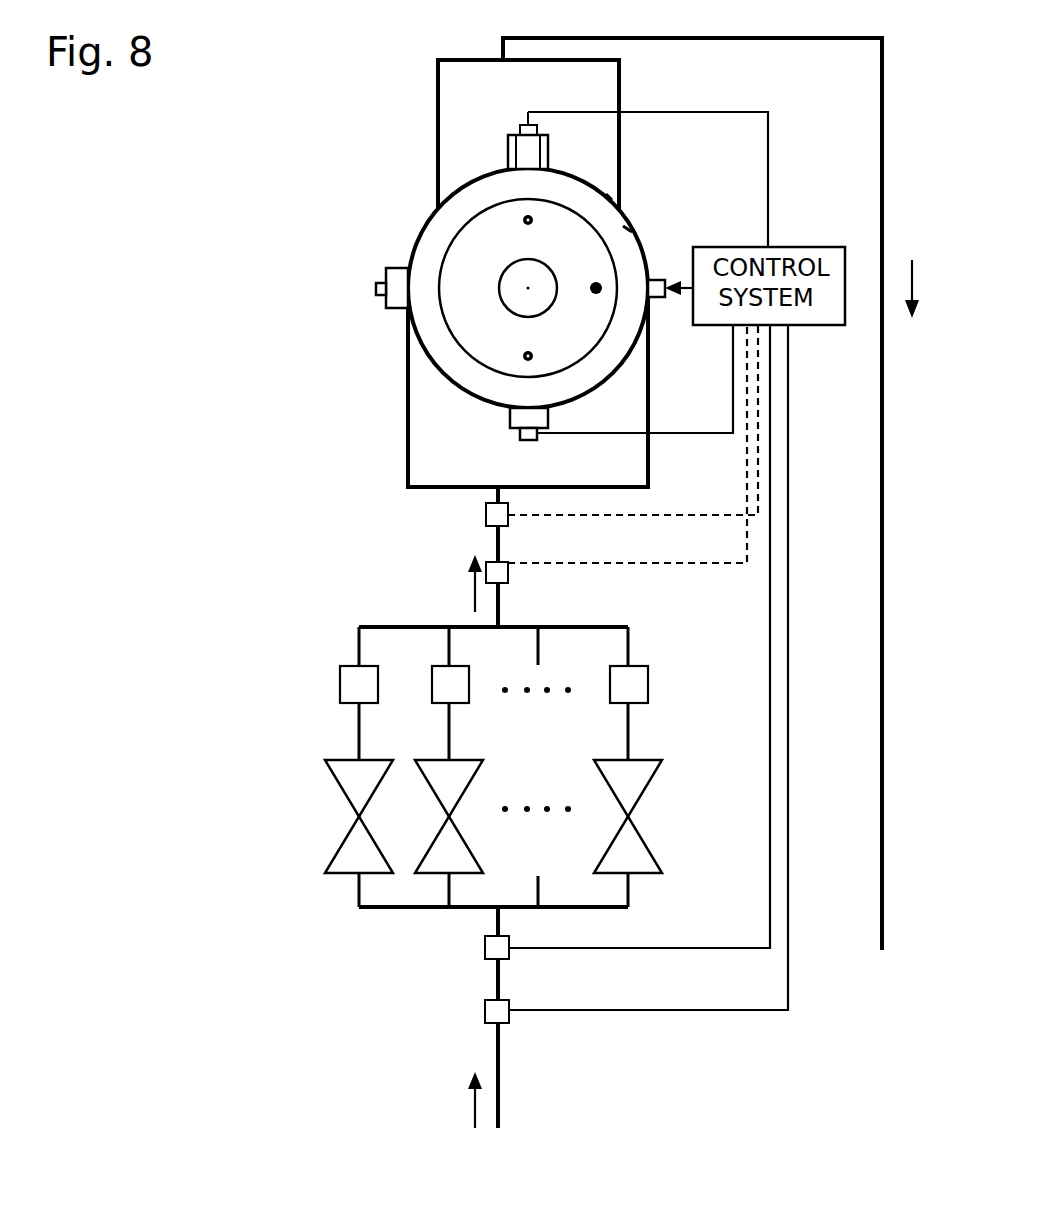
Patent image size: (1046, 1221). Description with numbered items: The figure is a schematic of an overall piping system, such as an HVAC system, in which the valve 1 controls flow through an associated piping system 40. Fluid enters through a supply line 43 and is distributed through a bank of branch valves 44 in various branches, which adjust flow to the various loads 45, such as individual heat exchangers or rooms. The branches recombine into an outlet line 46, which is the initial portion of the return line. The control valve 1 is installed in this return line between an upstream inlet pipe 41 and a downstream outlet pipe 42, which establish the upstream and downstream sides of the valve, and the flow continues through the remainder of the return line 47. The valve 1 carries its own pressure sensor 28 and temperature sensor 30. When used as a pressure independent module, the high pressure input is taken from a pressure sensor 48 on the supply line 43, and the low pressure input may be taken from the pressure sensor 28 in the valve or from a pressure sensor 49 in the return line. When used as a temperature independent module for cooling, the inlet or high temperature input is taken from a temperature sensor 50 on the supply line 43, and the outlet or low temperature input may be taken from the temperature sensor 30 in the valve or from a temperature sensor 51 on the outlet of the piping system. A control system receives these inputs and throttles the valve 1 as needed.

The valve 1 is at (672, 231).
The pressure sensor 28 is at (508, 424).
The temperature sensor 30 is at (548, 150).
The piping system 40 is at (275, 740).
The upstream inlet pipe 41 is at (650, 460).
The downstream outlet pipe 42 is at (620, 75).
The supply line 43 is at (500, 1105).
The branch valves 44 is at (335, 875).
The loads 45 is at (349, 665).
The outlet line 46 is at (500, 600).
The return line 47 is at (883, 458).
The pressure sensor 48 is at (509, 1015).
The pressure sensor 49 is at (509, 568).
The temperature sensor 50 is at (509, 955).
The temperature sensor 51 is at (509, 521).